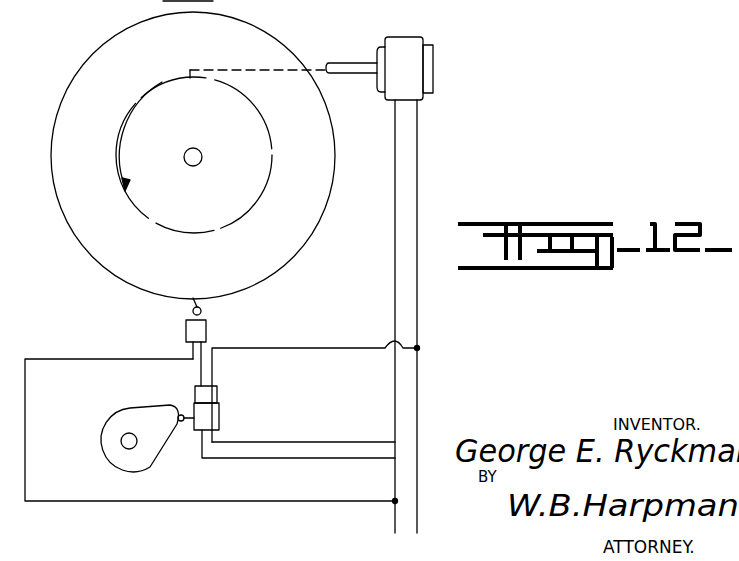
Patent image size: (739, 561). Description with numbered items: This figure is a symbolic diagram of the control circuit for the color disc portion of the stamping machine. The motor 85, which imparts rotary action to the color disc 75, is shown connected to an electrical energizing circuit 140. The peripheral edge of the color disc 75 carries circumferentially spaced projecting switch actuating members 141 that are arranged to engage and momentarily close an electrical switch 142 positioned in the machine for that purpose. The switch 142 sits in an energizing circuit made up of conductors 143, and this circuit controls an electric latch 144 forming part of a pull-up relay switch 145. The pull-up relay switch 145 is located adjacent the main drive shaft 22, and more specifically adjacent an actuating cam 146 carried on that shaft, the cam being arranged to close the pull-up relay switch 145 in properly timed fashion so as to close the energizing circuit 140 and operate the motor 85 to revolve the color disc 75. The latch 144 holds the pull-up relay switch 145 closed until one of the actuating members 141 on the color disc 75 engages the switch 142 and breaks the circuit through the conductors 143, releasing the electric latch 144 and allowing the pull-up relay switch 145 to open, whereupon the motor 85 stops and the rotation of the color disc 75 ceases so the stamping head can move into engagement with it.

The color disc 75 is at (303, 221).
The switch actuating members 141 is at (76, 92).
The motor 85 is at (412, 72).
The electrical energizing circuit 140 is at (395, 183).
The electrical switch 142 is at (203, 330).
The conductors 143 is at (67, 358).
The electric latch 144 is at (213, 393).
The pull-up relay switch 145 is at (217, 418).
The actuating cam 146 is at (112, 414).
The main drive shaft 22 is at (128, 441).